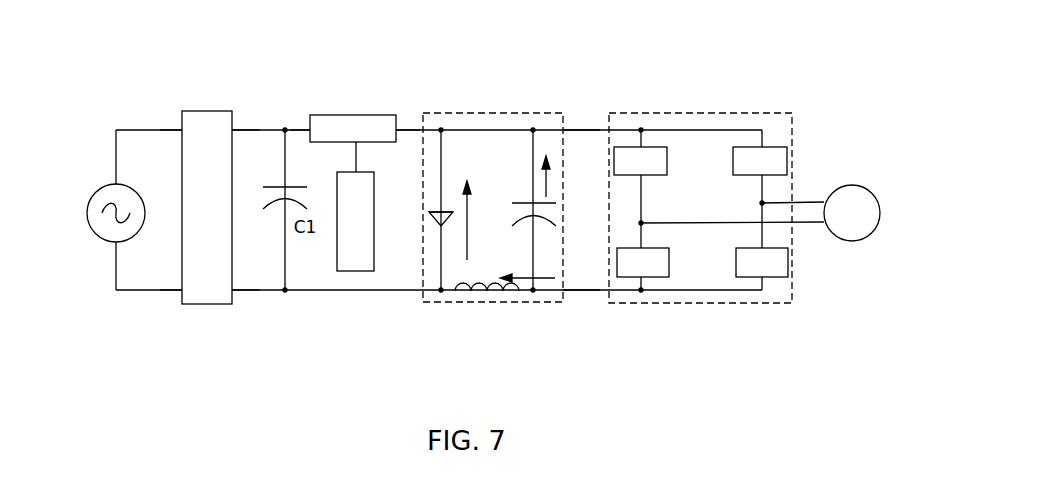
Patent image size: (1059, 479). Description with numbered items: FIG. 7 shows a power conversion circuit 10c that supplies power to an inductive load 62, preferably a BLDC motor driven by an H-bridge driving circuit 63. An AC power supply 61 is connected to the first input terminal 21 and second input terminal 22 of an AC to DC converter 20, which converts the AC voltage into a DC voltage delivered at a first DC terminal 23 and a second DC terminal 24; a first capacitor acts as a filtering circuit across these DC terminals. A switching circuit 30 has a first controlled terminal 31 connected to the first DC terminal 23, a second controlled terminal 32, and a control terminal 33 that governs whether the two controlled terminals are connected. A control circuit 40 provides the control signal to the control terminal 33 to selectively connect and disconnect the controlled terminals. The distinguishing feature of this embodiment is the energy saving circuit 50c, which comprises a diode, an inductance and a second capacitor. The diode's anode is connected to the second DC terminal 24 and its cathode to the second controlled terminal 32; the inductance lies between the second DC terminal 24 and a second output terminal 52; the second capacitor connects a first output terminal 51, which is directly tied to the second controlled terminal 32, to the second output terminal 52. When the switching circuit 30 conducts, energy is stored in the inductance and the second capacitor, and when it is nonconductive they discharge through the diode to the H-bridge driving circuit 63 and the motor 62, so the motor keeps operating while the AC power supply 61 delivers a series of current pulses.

The power conversion circuit 10c is at (591, 97).
The AC to DC converter 20 is at (200, 111).
The first input terminal 21 is at (169, 140).
The second input terminal 22 is at (169, 280).
The first DC terminal 23 is at (246, 140).
The second DC terminal 24 is at (246, 280).
The switching circuit 30 is at (347, 115).
The first controlled terminal 31 is at (298, 119).
The second controlled terminal 32 is at (408, 119).
The control terminal 33 is at (343, 157).
The control circuit 40 is at (374, 210).
The energy saving circuit 50c is at (443, 113).
The first output terminal 51 is at (581, 141).
The second output terminal 52 is at (581, 280).
The AC power supply 61 is at (91, 227).
The inductive load 62 is at (850, 185).
The H-bridge driving circuit 63 is at (735, 113).